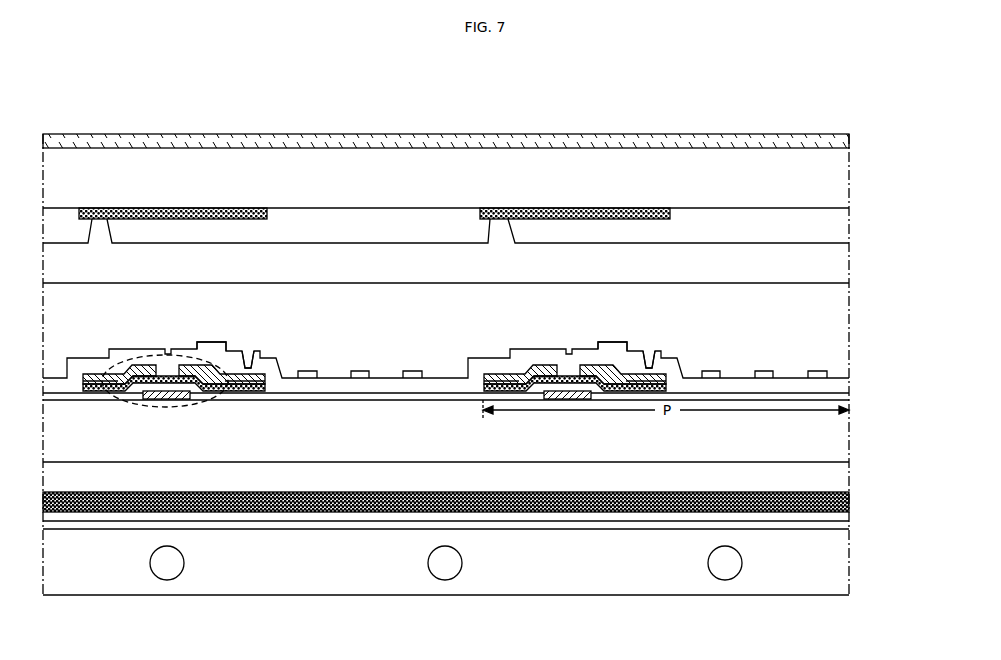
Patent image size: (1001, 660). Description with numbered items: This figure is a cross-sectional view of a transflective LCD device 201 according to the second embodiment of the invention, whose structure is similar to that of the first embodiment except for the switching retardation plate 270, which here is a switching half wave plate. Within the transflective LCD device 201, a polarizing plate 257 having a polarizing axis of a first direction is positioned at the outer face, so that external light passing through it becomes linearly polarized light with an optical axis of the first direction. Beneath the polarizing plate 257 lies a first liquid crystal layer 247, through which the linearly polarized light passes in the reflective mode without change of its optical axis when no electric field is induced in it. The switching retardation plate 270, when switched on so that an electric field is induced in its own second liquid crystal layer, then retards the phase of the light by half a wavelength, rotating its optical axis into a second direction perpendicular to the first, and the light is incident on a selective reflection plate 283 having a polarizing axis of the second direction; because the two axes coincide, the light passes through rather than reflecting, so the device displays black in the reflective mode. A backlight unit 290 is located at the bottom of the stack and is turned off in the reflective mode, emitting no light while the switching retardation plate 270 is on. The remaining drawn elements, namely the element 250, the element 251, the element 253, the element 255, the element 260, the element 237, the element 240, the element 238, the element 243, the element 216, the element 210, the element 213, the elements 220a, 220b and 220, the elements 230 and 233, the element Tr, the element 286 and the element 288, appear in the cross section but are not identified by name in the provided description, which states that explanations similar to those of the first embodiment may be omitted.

The transflective LCD device 201 is at (602, 97).
The polarizing plate 257 is at (852, 141).
The upper substrate 250 is at (838, 178).
The black matrix 251 is at (553, 212).
The color filter layer 253 is at (572, 232).
The common electrode 255 is at (692, 270).
The color filter substrate assembly 260 is at (892, 428).
The first liquid crystal layer 247 is at (832, 337).
The passivation layer 237 is at (444, 385).
The pixel electrode 240 is at (213, 344).
The contact hole 238 is at (247, 353).
The spacer 243 is at (302, 370).
The gate insulating layer 216 is at (312, 398).
The lower substrate 210 is at (840, 431).
The gate electrode 213 is at (177, 401).
The active layer 220a is at (216, 394).
The ohmic contact layer 220b is at (244, 391).
The semiconductor layer 220 is at (232, 441).
The source electrode 230 is at (139, 356).
The drain electrode 233 is at (185, 356).
The thin film transistor Tr is at (168, 413).
The switching retardation plate 270 is at (840, 472).
The selective reflection plate 283 is at (852, 500).
The optical sheets 286 is at (850, 510).
The backlight unit 290 is at (891, 523).
The lamp 288 is at (724, 565).